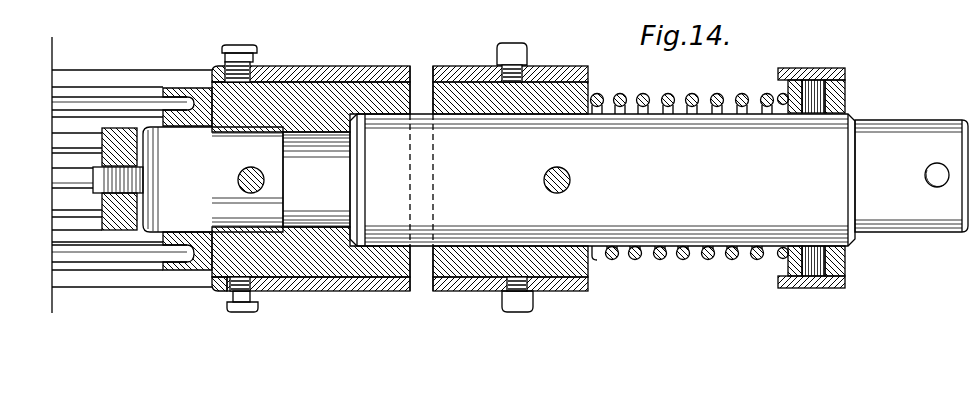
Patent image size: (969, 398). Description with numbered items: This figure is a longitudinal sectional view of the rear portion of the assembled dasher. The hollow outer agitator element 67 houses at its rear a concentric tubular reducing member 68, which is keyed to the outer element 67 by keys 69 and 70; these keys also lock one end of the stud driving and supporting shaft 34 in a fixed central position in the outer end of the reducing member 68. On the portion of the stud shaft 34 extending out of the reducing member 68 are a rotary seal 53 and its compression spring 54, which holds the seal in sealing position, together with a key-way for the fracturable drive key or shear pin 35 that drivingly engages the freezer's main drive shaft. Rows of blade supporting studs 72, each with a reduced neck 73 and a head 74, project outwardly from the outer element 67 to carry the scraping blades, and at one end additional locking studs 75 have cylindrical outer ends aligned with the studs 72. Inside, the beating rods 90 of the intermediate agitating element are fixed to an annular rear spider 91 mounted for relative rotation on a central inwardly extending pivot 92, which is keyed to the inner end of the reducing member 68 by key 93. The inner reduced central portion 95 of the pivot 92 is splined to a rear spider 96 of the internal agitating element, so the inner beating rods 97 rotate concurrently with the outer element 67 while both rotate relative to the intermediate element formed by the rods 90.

The stud shaft 34 is at (673, 117).
The shear pin 35 is at (940, 163).
The rotary seal 53 is at (829, 68).
The compression spring 54 is at (709, 260).
The outer agitator element 67 is at (367, 67).
The reducing member 68 is at (482, 265).
The key 69 is at (420, 292).
The key 70 is at (571, 178).
The blade supporting stud 72 is at (247, 178).
The reduced neck 73 is at (232, 56).
The head 74 is at (241, 45).
The locking stud 75 is at (508, 43).
The beating rod 90 is at (60, 177).
The rear spider 91 is at (192, 271).
The pivot 92 is at (146, 198).
The key 93 is at (250, 167).
The reduced central portion 95 is at (93, 180).
The rear spider 96 is at (114, 128).
The beating rod 97 is at (60, 146).